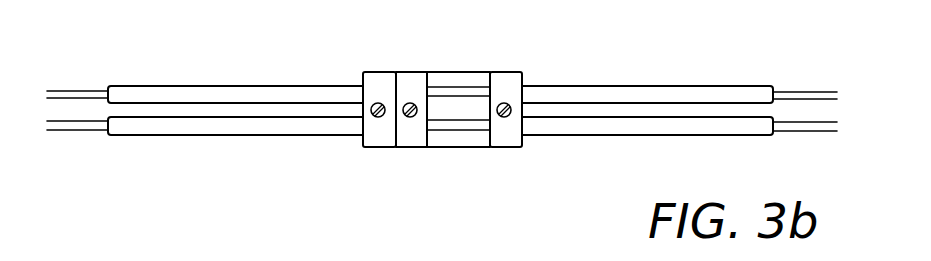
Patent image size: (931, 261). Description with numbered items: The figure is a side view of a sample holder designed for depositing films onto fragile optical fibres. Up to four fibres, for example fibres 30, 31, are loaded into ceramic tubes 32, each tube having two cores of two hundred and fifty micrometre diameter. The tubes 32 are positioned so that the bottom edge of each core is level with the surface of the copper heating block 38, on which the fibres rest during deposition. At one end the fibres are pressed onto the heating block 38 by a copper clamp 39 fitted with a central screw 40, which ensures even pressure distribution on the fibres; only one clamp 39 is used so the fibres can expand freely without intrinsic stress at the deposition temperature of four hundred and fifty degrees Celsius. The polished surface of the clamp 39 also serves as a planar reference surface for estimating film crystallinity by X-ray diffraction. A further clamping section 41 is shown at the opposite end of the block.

The optical fibre 30 is at (84, 97).
The optical fibre 31 is at (65, 90).
The ceramic tube 32 is at (267, 86).
The copper heating block 38 is at (460, 138).
The copper clamp 39 is at (413, 75).
The central screw 40 is at (413, 118).
The end clamp section 41 is at (380, 140).